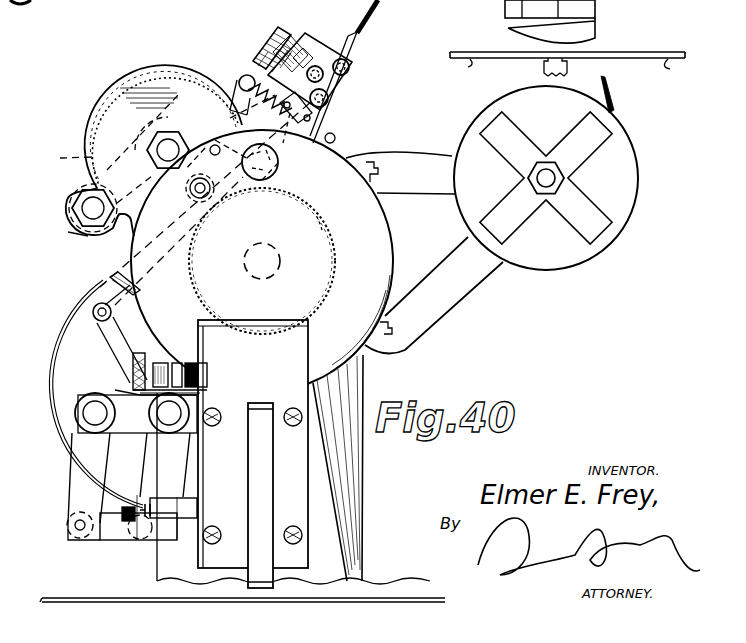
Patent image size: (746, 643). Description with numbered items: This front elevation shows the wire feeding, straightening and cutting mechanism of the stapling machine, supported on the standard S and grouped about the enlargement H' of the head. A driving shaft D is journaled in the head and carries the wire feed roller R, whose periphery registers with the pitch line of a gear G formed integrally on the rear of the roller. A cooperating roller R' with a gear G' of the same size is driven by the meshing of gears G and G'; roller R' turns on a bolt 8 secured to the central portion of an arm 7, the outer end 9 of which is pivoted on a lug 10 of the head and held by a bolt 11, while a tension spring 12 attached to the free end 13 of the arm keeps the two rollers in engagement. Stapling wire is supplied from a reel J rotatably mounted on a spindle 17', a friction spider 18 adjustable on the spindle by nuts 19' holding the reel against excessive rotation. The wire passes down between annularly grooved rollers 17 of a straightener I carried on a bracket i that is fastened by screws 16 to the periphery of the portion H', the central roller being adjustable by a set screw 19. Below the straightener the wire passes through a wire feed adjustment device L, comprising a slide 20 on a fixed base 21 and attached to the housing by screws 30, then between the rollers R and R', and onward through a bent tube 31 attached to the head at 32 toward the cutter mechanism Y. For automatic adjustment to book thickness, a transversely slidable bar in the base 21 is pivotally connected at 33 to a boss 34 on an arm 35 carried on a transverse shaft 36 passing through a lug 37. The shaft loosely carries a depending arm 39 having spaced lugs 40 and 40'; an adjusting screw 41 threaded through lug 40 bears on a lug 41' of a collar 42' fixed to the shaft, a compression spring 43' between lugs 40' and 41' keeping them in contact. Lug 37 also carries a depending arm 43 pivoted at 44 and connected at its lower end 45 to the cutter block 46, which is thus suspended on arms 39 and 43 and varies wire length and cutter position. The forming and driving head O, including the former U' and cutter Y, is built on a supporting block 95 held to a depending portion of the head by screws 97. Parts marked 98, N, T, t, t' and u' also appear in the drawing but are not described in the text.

The arm 7 is at (159, 148).
The bolt 8 is at (170, 130).
The outer end of arm 9 is at (77, 190).
The lug 10 is at (107, 227).
The bolt 11 is at (78, 208).
The tension spring 12 is at (328, 100).
The free end of arm 13 is at (243, 78).
The screws 16 is at (333, 136).
The annularly grooved rollers 17 is at (345, 60).
The friction spider 18 is at (580, 203).
The set screw 19 is at (283, 36).
The slide 20 is at (279, 165).
The fixed base 21 is at (279, 152).
The screws 30 is at (260, 154).
The bent tube 31 is at (50, 382).
The attachment point 32 is at (118, 280).
The pivot connection 33 is at (95, 308).
The boss 34 is at (92, 313).
The arm 35 is at (110, 345).
The transverse shaft 36 is at (159, 417).
The lug 37 is at (120, 393).
The depending arm 39 is at (160, 452).
The lug 40 is at (164, 348).
The adjusting screw 41 is at (150, 335).
The depending arm 43 is at (65, 475).
The pivot 44 is at (75, 413).
The lower end of arm 45 is at (74, 538).
The cutter block 46 is at (130, 540).
The supporting block 95 is at (243, 479).
The screws 97 is at (289, 410).
The box 98 is at (505, 4).
The spindle 17' is at (518, 177).
The nuts 19' is at (551, 150).
The lug 40' is at (190, 370).
The lug 41' is at (182, 355).
The collar 42' is at (190, 381).
The compression spring 43' is at (207, 361).
The driving shaft D is at (267, 252).
The gear G is at (262, 250).
The gear G' is at (154, 138).
The wire feed roller R is at (331, 214).
The cooperating roller R' is at (163, 117).
The head enlargement H' is at (275, 261).
The straightener I is at (336, 42).
The bracket i is at (352, 75).
The reel J is at (629, 168).
The wire feed adjustment device L is at (124, 226).
The block N is at (539, 70).
The rail T is at (663, 50).
The rail end t is at (463, 69).
The rail end t' is at (674, 70).
The guide u' is at (569, 31).
The former U' is at (253, 444).
The cutter mechanism Y is at (191, 512).
The forming and driving head O is at (300, 501).
The standard S is at (356, 486).